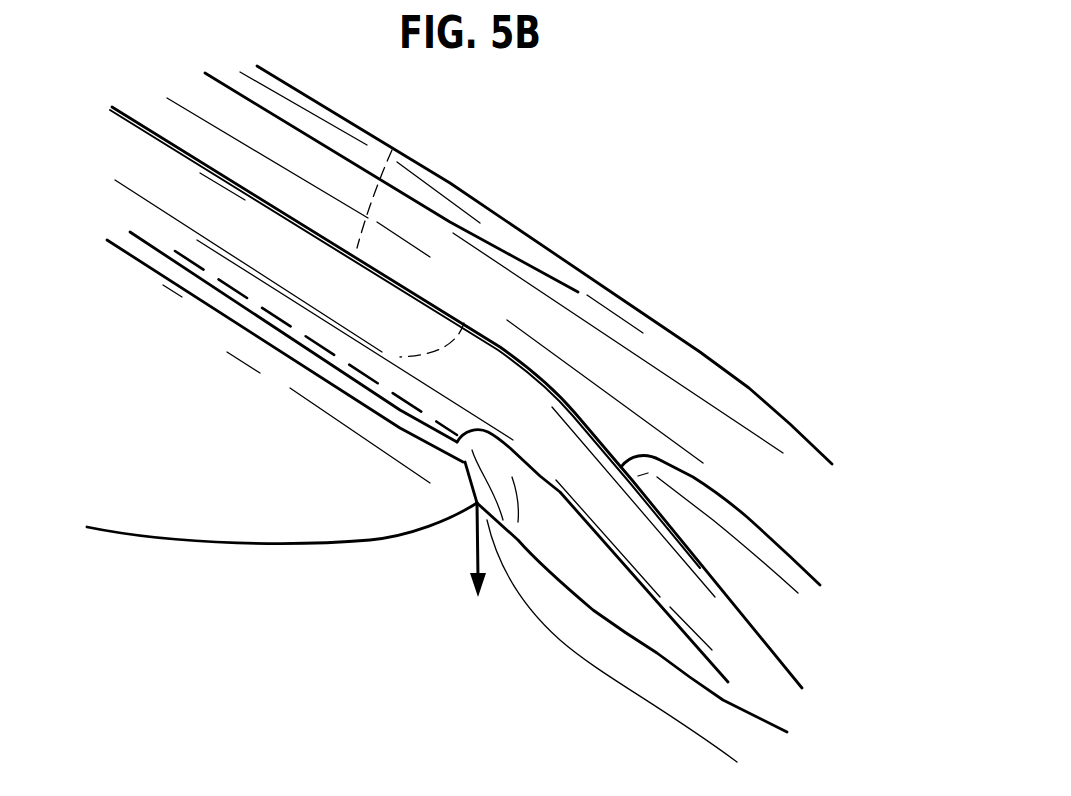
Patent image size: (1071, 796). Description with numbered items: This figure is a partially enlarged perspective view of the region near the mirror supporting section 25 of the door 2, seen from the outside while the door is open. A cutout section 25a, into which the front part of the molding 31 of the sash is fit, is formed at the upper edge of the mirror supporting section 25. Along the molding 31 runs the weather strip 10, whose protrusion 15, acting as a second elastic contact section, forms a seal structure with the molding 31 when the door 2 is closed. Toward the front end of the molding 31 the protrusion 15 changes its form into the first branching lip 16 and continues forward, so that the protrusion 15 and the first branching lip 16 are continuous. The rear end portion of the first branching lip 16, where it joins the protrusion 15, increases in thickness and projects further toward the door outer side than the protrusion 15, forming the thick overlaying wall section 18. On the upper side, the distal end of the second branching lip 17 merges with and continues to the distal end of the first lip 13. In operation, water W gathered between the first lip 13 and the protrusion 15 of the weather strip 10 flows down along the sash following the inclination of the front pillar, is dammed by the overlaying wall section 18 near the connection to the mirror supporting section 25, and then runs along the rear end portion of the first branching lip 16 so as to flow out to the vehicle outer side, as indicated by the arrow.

The door 2 is at (697, 259).
The weather strip 10 is at (452, 186).
The first lip 13 is at (235, 188).
The protrusion 15 is at (289, 338).
The first branching lip 16 is at (593, 578).
The second branching lip 17 is at (708, 576).
The overlaying wall section 18 is at (504, 471).
The mirror supporting section 25 is at (437, 617).
The cutout section 25a is at (299, 532).
The molding 31 is at (173, 462).
The water W is at (231, 286).